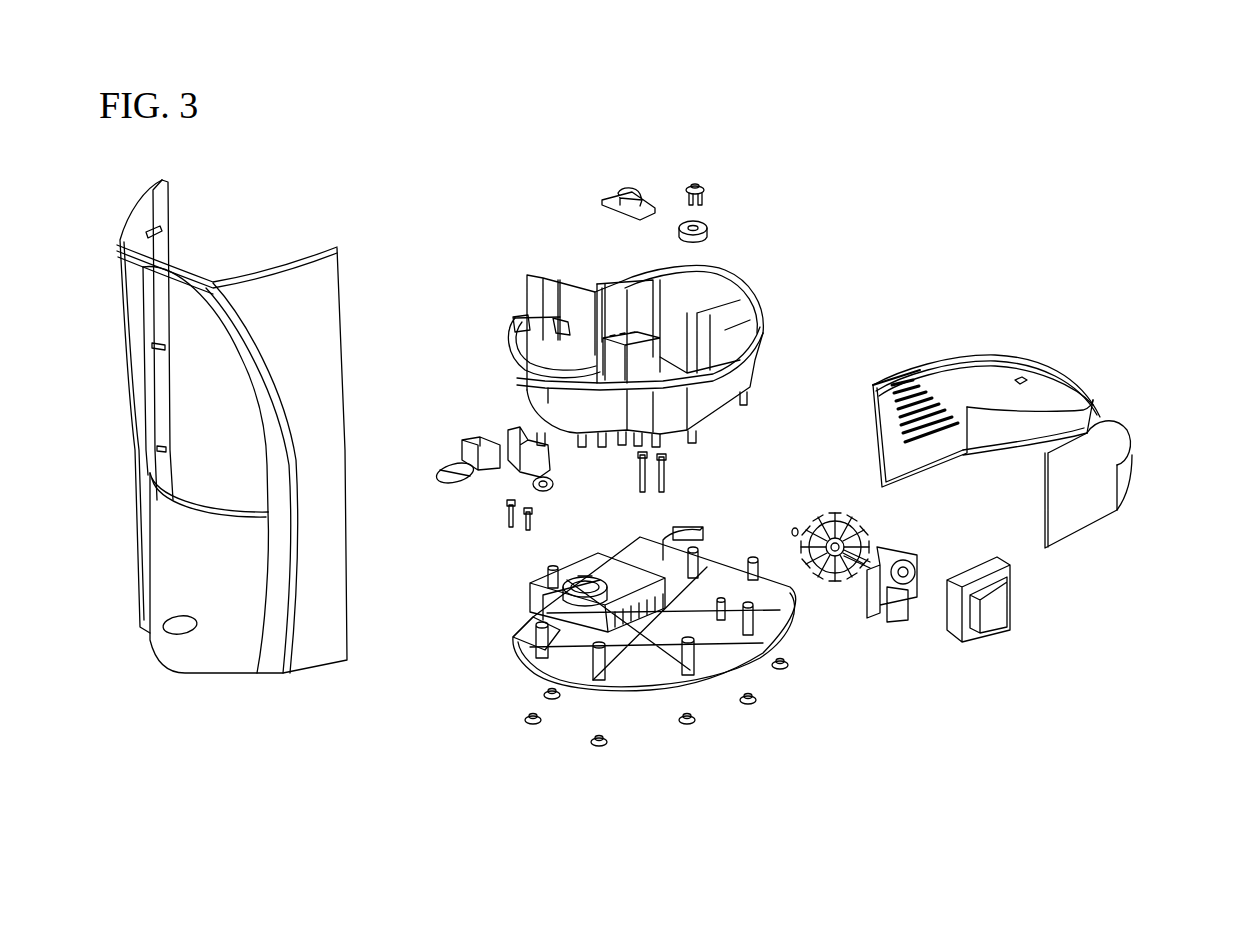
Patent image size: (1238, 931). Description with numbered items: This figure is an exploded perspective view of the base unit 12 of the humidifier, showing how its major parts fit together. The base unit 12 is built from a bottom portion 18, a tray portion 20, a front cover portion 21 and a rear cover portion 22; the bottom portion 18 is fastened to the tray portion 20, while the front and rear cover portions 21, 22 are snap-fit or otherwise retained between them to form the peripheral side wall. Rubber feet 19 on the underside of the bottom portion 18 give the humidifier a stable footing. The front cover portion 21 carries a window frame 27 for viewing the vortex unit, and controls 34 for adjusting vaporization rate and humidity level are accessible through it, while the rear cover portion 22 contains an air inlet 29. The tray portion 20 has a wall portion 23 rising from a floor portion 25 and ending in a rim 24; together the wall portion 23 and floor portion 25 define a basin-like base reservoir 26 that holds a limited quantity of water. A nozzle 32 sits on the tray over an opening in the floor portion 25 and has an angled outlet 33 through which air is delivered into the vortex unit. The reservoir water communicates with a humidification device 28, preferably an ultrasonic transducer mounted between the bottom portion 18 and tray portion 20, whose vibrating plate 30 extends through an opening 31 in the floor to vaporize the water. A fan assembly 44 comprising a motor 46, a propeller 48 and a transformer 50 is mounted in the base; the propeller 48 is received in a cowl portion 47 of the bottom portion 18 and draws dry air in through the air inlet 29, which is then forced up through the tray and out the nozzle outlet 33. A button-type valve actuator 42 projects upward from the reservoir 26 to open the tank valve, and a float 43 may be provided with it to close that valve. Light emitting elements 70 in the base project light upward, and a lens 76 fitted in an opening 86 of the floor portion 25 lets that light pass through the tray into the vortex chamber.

The base unit 12 is at (1068, 718).
The bottom portion 18 is at (604, 625).
The rubber feet 19 is at (745, 707).
The tray portion 20 is at (631, 328).
The front cover portion 21 is at (173, 648).
The rear cover portion 22 is at (1015, 421).
The wall portion 23 is at (558, 286).
The rim 24 is at (537, 258).
The floor portion 25 is at (753, 321).
The base reservoir 26 is at (700, 292).
The window frame 27 is at (223, 313).
The humidification device 28 is at (540, 665).
The air inlet 29 is at (927, 405).
The vibrating plate 30 is at (620, 560).
The opening 31 is at (670, 344).
The nozzle 32 is at (520, 338).
The outlet 33 is at (517, 318).
The controls 34 is at (498, 405).
The valve actuator 42 is at (695, 185).
The float 43 is at (702, 238).
The fan assembly 44 is at (877, 582).
The motor 46 is at (903, 547).
The cowl portion 47 is at (690, 526).
The propeller 48 is at (843, 520).
The transformer 50 is at (998, 607).
The light emitting elements 70 is at (657, 490).
The lens 76 is at (625, 190).
The opening 86 is at (620, 334).